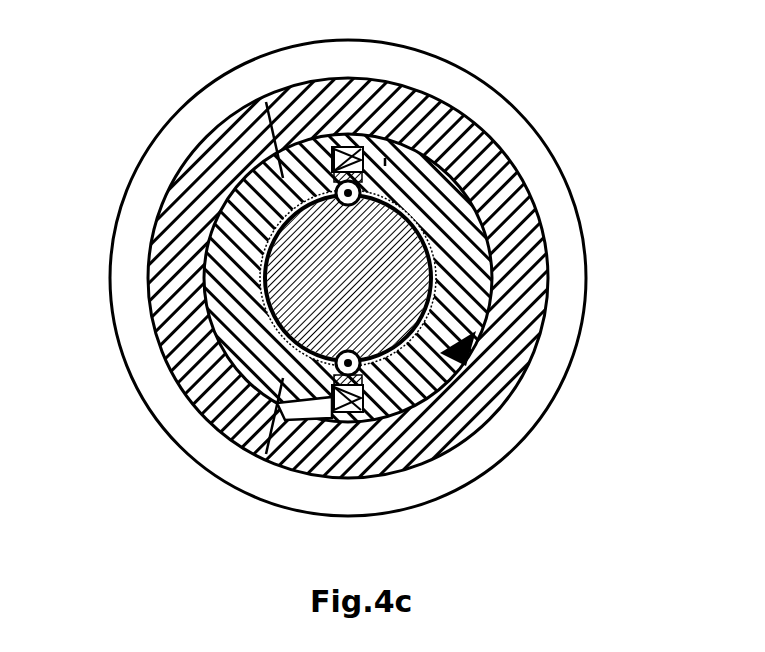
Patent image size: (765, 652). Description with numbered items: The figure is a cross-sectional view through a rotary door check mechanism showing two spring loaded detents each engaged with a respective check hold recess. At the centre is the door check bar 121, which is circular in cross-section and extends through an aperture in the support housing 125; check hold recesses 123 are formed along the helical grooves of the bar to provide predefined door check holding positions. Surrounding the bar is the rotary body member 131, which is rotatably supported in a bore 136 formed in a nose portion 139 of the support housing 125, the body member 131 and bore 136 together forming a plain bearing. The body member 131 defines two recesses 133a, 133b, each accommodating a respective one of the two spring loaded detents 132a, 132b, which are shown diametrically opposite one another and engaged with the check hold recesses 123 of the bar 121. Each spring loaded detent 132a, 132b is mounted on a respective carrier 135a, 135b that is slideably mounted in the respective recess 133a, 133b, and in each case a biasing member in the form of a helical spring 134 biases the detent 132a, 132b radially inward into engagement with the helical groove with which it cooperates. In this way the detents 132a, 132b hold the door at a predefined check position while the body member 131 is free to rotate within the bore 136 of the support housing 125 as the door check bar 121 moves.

The door check bar 121 is at (310, 287).
The check hold recesses 123 is at (240, 278).
The support housing 125 is at (158, 135).
The rotary body member 131 is at (492, 280).
The spring loaded detent 132a is at (347, 192).
The spring loaded detent 132b is at (347, 363).
The recess 133a is at (467, 94).
The recess 133b is at (270, 410).
The helical spring 134 is at (332, 278).
The carrier 135a is at (266, 102).
The carrier 135b is at (183, 398).
The bore 136 is at (442, 352).
The nose portion 139 is at (493, 145).